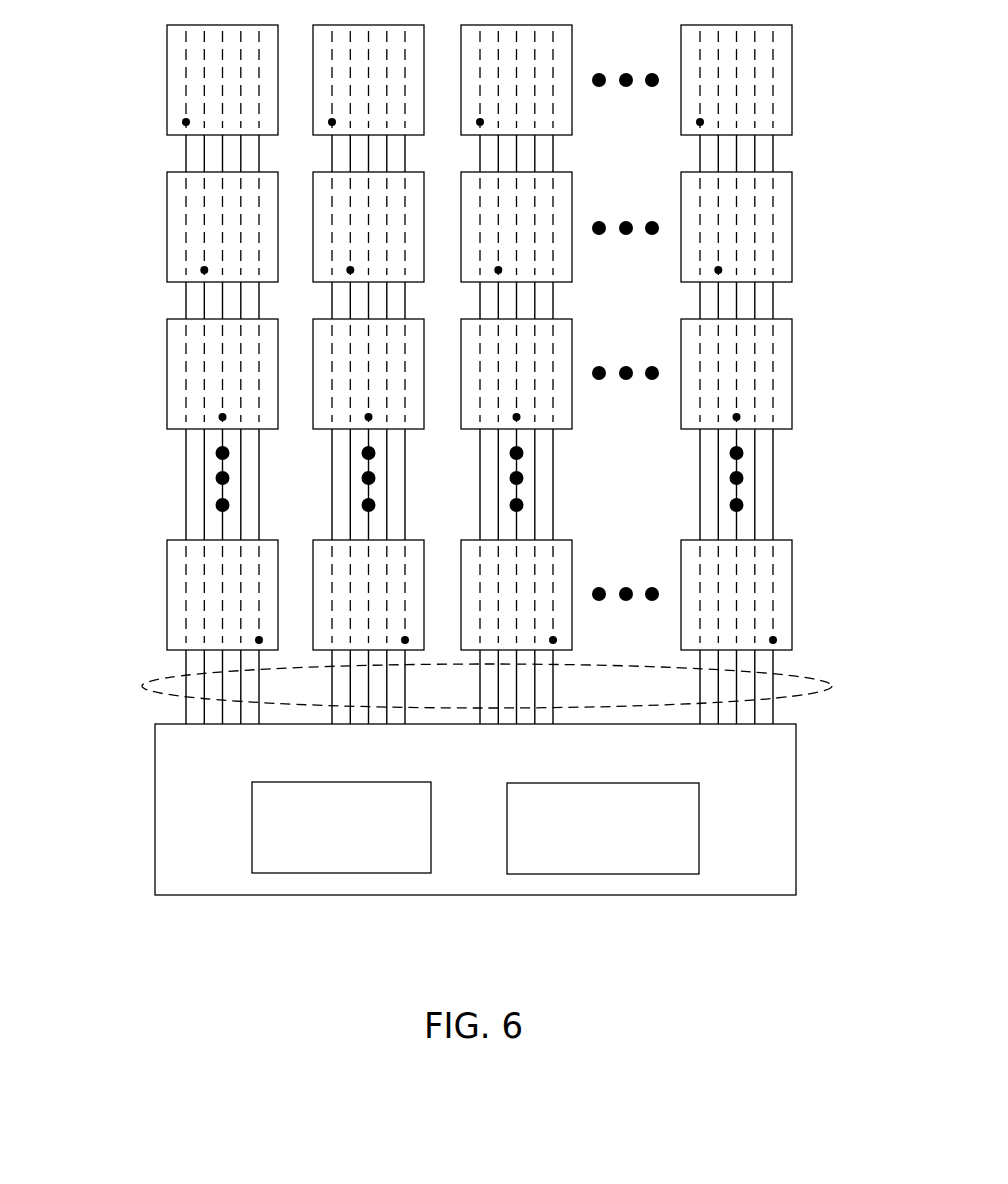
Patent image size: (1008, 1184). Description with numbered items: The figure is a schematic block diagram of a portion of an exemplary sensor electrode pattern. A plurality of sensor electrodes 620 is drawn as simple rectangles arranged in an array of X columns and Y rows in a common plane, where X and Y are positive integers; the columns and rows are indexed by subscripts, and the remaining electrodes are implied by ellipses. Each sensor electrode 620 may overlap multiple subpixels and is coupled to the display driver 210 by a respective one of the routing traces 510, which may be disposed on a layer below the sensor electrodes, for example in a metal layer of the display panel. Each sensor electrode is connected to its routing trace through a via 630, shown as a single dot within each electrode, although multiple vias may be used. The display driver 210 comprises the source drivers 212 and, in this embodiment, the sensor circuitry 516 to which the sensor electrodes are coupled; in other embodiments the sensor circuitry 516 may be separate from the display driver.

The sensor electrodes 620 is at (178, 80).
The via 630 is at (182, 125).
The routing traces 510 is at (142, 686).
The display driver 210 is at (395, 762).
The source drivers 212 is at (357, 854).
The sensor circuitry 516 is at (619, 855).